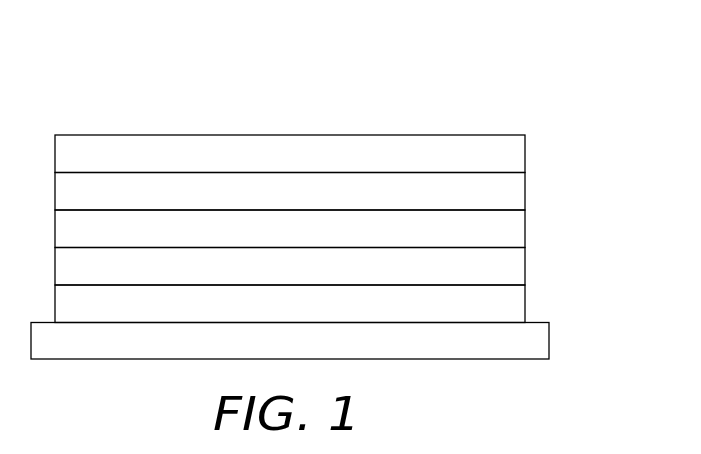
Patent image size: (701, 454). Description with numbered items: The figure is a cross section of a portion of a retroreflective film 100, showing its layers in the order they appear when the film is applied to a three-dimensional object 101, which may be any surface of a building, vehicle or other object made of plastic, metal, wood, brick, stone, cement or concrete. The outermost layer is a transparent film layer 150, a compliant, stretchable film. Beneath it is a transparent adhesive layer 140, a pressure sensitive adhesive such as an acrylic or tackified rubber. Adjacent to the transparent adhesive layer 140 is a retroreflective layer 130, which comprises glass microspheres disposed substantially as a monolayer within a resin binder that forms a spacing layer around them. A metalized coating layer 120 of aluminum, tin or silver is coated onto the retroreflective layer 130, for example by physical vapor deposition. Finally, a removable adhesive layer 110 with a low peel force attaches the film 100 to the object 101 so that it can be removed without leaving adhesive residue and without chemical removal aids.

The retroreflective film 100 is at (334, 193).
The three-dimensional object 101 is at (550, 340).
The removable adhesive layer 110 is at (526, 305).
The metalized coating layer 120 is at (526, 269).
The retroreflective layer 130 is at (526, 230).
The transparent adhesive layer 140 is at (526, 192).
The transparent film layer 150 is at (526, 154).